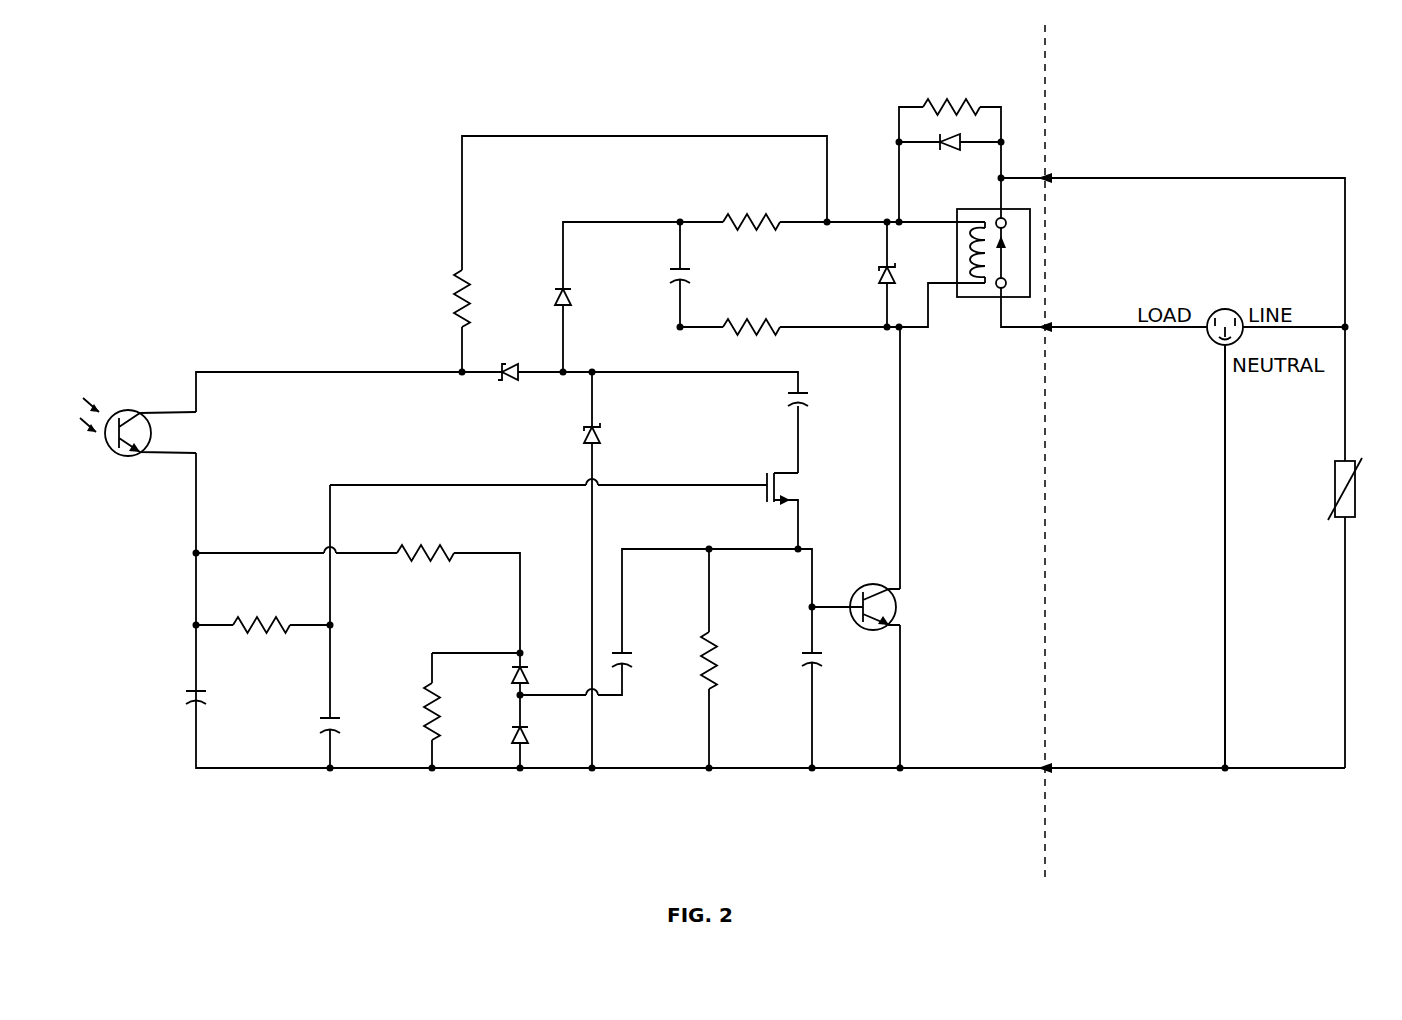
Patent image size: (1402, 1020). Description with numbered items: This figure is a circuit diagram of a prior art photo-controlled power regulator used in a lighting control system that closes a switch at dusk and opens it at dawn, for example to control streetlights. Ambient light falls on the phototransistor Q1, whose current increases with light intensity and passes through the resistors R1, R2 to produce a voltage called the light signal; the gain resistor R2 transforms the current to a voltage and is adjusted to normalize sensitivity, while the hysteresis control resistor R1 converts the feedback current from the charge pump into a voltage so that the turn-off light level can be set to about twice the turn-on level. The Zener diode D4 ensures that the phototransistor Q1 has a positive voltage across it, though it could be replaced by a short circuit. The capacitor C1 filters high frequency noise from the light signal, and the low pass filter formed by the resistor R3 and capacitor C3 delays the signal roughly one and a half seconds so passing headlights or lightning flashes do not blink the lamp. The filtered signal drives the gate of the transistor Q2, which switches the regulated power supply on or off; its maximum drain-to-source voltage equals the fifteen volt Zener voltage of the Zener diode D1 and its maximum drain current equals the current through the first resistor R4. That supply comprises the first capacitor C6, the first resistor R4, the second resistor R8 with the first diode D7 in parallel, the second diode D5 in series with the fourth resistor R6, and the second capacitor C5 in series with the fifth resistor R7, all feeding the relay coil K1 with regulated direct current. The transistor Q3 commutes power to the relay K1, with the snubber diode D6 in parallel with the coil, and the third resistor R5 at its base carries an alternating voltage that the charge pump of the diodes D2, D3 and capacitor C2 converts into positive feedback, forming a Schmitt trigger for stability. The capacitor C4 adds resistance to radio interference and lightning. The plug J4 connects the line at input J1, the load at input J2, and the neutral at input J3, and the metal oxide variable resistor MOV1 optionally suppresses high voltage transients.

The phototransistor Q1 is at (138, 427).
The transistor Q2 is at (826, 505).
The transistor Q3 is at (905, 608).
The resistor R1 is at (472, 710).
The gain resistor R2 is at (458, 573).
The resistor R3 is at (263, 597).
The first resistor R4 is at (427, 298).
The third resistor R5 is at (737, 660).
The fourth resistor R6 is at (751, 194).
The fifth resistor R7 is at (751, 301).
The second resistor R8 is at (951, 79).
The capacitor C1 is at (231, 710).
The capacitor C2 is at (648, 632).
The capacitor C3 is at (355, 698).
The capacitor C4 is at (846, 666).
The second capacitor C5 is at (641, 279).
The first capacitor C6 is at (831, 423).
The Zener diode D1 is at (619, 430).
The diode D2 is at (537, 731).
The diode D3 is at (537, 674).
The Zener diode D4 is at (508, 344).
The second diode D5 is at (547, 284).
The snubber diode D6 is at (901, 262).
The first diode D7 is at (942, 171).
The relay K1 is at (1059, 253).
The input J1 is at (1173, 165).
The input J2 is at (1104, 315).
The input J3 is at (1062, 754).
The plug J4 is at (1199, 556).
The metal oxide variable resistor MOV1 is at (1319, 474).